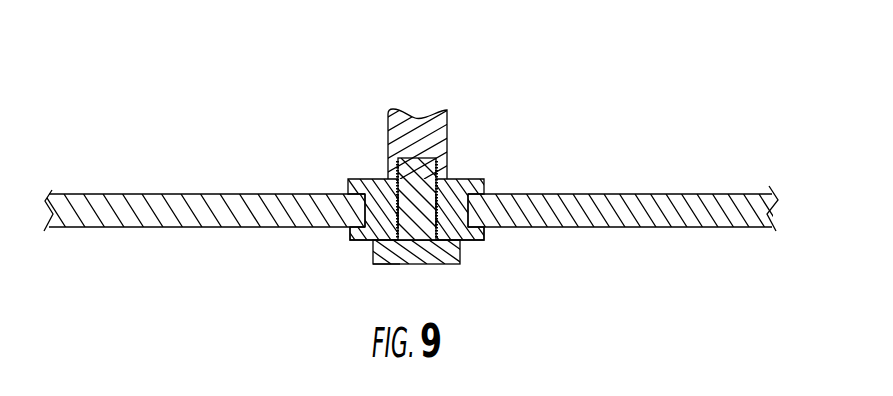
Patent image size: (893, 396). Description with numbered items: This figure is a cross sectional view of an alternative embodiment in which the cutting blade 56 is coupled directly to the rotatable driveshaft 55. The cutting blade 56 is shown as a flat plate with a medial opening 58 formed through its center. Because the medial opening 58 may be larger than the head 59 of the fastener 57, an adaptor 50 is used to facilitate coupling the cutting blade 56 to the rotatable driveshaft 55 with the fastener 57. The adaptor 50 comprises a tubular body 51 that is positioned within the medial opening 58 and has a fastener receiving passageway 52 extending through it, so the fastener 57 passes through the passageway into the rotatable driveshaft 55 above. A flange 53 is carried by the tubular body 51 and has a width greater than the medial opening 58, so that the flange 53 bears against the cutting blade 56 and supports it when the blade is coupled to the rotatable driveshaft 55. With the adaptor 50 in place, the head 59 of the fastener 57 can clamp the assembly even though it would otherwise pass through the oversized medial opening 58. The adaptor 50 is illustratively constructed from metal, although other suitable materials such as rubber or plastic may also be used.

The adaptor 50 is at (376, 193).
The tubular body 51 is at (457, 206).
The fastener receiving passageway 52 is at (393, 222).
The flange 53 is at (350, 232).
The rotatable driveshaft 55 is at (418, 118).
The cutting blade 56 is at (115, 175).
The fastener 57 is at (447, 268).
The medial opening 58 is at (440, 230).
The head 59 is at (390, 258).